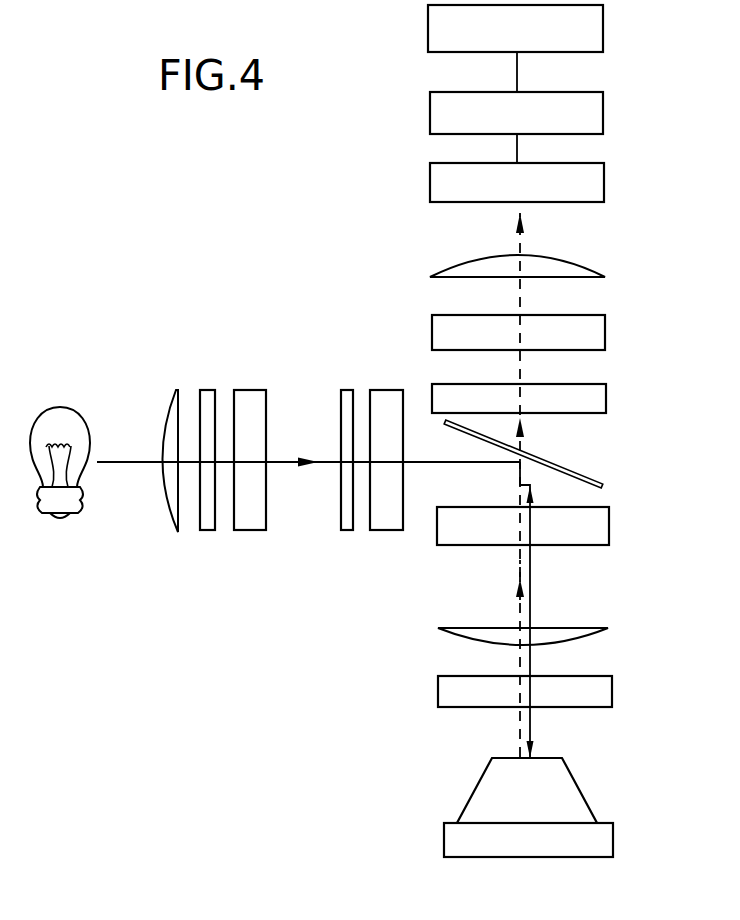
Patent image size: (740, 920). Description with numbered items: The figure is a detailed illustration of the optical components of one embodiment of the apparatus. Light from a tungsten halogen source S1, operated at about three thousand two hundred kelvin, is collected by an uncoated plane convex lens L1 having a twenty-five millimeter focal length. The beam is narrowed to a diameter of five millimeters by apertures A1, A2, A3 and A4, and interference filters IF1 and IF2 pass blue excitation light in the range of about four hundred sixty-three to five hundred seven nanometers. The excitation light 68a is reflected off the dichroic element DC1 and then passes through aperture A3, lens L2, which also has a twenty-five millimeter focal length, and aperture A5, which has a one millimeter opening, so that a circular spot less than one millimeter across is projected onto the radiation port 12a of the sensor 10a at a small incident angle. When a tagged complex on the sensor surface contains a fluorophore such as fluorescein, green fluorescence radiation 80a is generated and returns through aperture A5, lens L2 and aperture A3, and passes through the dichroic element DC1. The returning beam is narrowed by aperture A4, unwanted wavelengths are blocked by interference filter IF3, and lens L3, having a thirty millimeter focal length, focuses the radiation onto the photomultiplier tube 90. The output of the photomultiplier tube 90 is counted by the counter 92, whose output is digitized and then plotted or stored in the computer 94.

The tungsten halogen source S1 is at (62, 406).
The plane convex lens L1 is at (172, 398).
The aperture A1 is at (214, 398).
The interference filter IF1 is at (268, 396).
The excitation light 68a is at (318, 458).
The aperture A2 is at (353, 396).
The interference filter IF2 is at (402, 398).
The dichroic element DC1 is at (577, 472).
The aperture A3 is at (609, 525).
The fluorescence radiation 80a is at (518, 598).
The lens L2 is at (598, 626).
The aperture A5 is at (612, 692).
The radiation port 12a is at (552, 758).
The sensor 10a is at (456, 792).
The aperture A4 is at (606, 398).
The interference filter IF3 is at (605, 332).
The lens L3 is at (598, 272).
The photomultiplier tube 90 is at (604, 182).
The counter 92 is at (604, 115).
The computer 94 is at (604, 38).